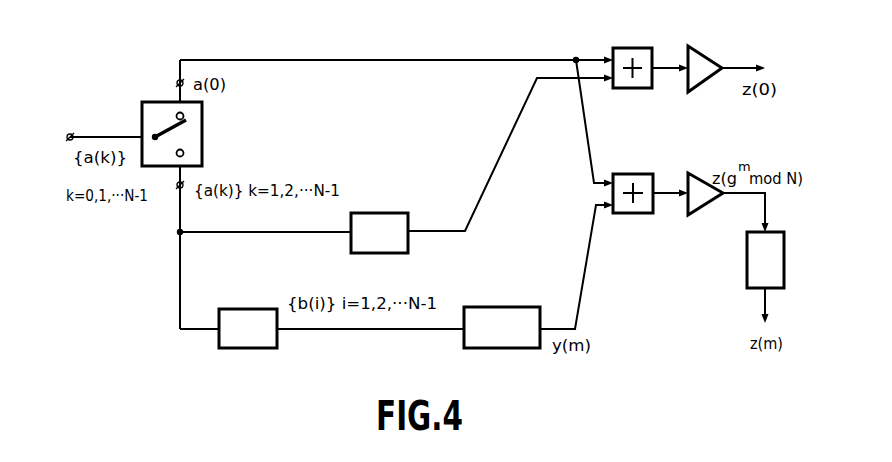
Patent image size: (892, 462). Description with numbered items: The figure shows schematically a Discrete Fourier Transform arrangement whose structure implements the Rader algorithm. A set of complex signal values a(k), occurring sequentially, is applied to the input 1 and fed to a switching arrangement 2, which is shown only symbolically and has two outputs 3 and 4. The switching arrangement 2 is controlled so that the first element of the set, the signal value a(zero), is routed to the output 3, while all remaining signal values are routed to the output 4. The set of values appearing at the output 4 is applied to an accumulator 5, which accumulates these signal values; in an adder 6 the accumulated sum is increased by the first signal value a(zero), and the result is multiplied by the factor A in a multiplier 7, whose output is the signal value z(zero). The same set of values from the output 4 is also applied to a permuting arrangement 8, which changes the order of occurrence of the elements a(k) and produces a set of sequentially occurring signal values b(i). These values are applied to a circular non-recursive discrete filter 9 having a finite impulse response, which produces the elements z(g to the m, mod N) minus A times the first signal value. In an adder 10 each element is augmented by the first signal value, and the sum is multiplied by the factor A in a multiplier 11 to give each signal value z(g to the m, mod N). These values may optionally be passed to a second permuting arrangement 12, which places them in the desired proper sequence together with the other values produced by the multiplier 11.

The input 1 is at (70, 133).
The switching arrangement 2 is at (202, 134).
The output 3 is at (177, 83).
The output 4 is at (177, 188).
The accumulator 5 is at (393, 213).
The adder 6 is at (640, 48).
The multiplier 7 is at (708, 52).
The permuting arrangement 8 is at (256, 350).
The circular non-recursive discrete filter 9 is at (491, 350).
The adder 10 is at (640, 214).
The multiplier 11 is at (711, 210).
The second permuting arrangement 12 is at (747, 254).